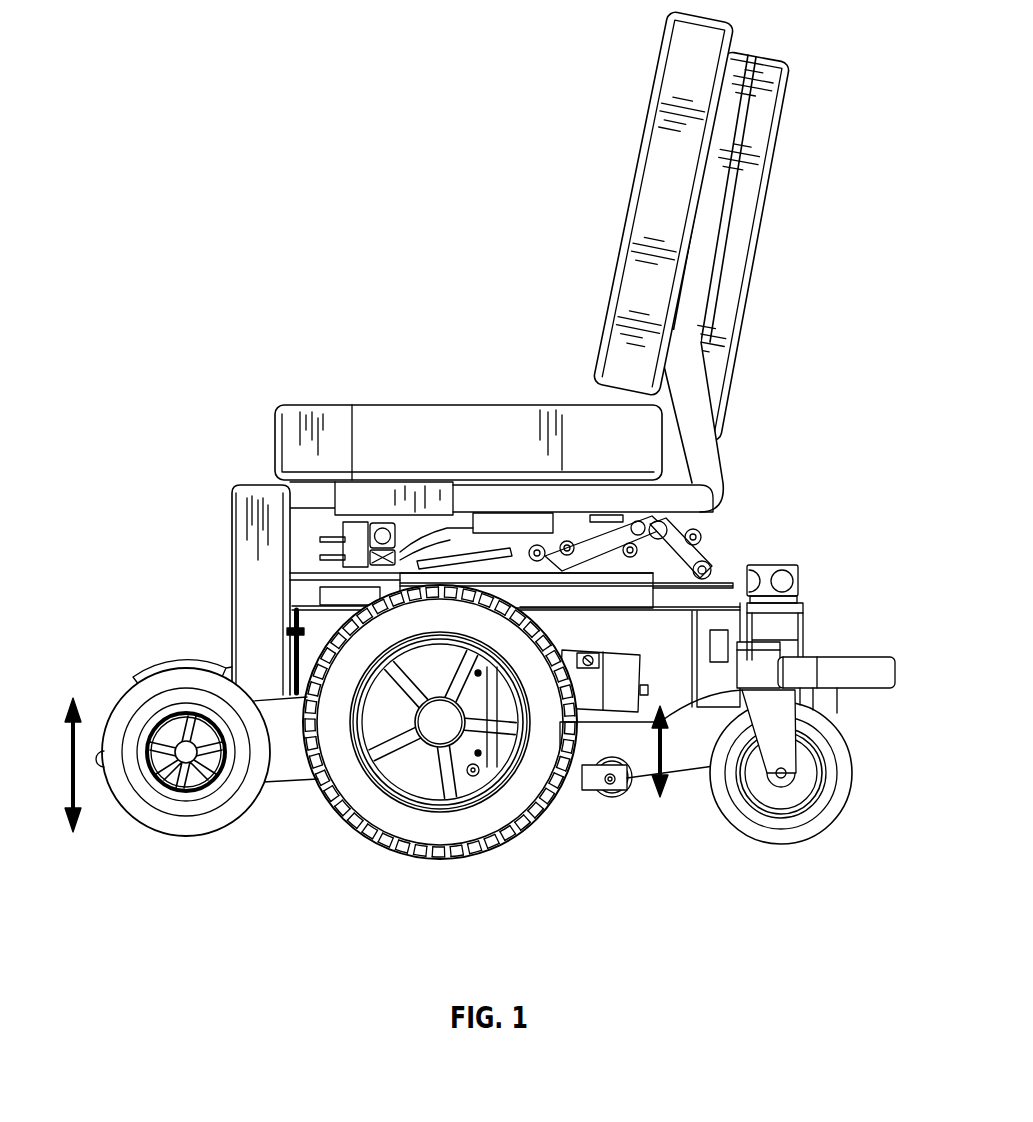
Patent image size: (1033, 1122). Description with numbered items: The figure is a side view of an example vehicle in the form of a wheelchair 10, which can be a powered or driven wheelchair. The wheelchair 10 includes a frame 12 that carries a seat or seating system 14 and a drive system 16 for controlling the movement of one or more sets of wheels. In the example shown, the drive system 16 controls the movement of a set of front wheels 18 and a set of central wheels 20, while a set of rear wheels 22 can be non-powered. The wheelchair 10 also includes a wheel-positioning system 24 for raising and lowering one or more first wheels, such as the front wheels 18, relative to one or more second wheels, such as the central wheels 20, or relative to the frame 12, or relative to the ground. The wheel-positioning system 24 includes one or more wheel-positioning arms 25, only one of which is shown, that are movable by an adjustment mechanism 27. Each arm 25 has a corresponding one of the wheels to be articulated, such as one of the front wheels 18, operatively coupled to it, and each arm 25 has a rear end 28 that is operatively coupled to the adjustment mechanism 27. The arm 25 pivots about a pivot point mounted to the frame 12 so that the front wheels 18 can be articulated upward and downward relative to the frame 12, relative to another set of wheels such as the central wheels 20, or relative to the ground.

The wheelchair 10 is at (225, 82).
The frame 12 is at (246, 582).
The seating system 14 is at (500, 390).
The drive system 16 is at (513, 776).
The front wheels 18 is at (198, 827).
The central wheels 20 is at (443, 857).
The rear wheels 22 is at (842, 788).
The wheel-positioning system 24 is at (735, 738).
The wheel-positioning arm 25 is at (603, 796).
The adjustment mechanism 27 is at (790, 540).
The rear end 28 is at (837, 713).